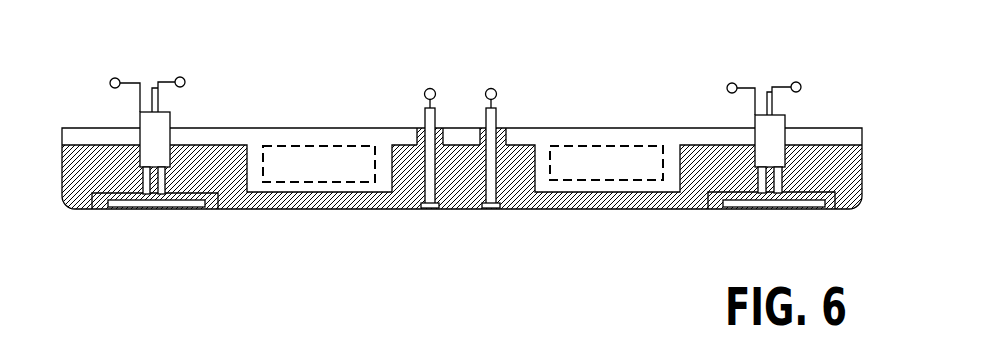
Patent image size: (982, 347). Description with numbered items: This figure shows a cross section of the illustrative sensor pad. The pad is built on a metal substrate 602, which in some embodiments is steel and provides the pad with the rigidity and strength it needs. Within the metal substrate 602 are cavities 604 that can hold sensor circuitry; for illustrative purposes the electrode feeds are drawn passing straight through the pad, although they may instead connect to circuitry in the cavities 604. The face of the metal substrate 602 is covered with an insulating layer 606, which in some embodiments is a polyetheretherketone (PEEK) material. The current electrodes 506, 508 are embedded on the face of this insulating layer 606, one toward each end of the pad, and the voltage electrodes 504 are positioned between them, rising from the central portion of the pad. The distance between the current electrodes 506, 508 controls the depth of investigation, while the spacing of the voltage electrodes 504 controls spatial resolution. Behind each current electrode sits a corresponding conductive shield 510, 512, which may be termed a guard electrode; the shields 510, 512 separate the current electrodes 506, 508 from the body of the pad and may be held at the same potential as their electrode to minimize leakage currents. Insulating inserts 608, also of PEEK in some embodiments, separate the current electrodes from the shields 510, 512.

The metal substrate 602 is at (545, 127).
The cavities 604 is at (302, 182).
The insulating layer 606 is at (357, 212).
The insulating inserts 608 is at (212, 210).
The voltage electrodes 504 is at (497, 212).
The current electrode 506 is at (162, 210).
The current electrode 508 is at (778, 208).
The conductive shield 510 is at (100, 202).
The conductive shield 512 is at (718, 202).